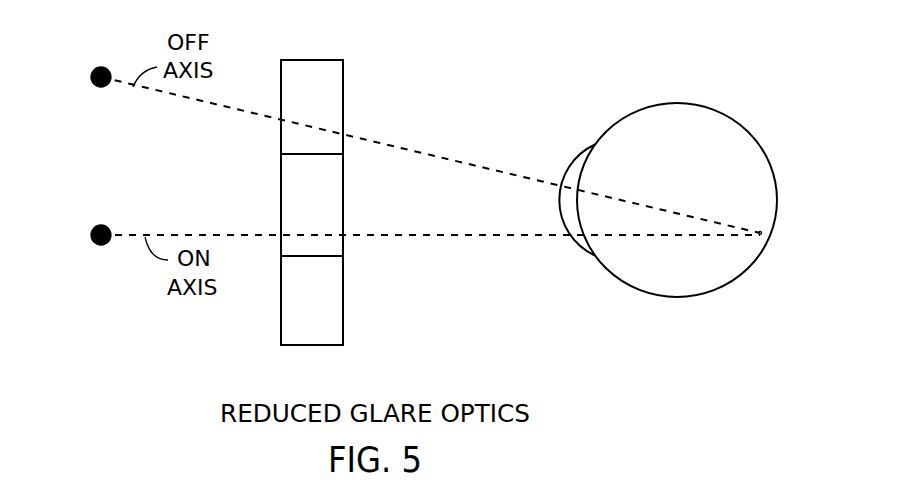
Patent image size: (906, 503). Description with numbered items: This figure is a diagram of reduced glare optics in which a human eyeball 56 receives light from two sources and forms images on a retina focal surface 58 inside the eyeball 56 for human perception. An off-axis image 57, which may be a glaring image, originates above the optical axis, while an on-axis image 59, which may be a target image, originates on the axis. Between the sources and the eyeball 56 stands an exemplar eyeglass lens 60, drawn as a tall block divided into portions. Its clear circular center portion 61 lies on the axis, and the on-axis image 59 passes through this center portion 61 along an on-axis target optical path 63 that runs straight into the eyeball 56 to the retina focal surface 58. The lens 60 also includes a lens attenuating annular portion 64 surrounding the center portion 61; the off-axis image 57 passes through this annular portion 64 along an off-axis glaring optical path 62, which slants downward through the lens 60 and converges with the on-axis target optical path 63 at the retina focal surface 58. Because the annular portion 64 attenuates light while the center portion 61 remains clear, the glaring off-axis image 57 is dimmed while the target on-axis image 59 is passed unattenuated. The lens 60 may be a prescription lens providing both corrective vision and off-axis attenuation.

The human eyeball 56 is at (700, 103).
The off-axis image 57 is at (100, 66).
The retina focal surface 58 is at (760, 233).
The on-axis image 59 is at (97, 226).
The eyeglass lens 60 is at (320, 60).
The clear circular center portion 61 is at (343, 249).
The off-axis glaring optical path 62 is at (455, 161).
The on-axis target optical path 63 is at (442, 236).
The lens attenuating annular portion 64 is at (343, 312).